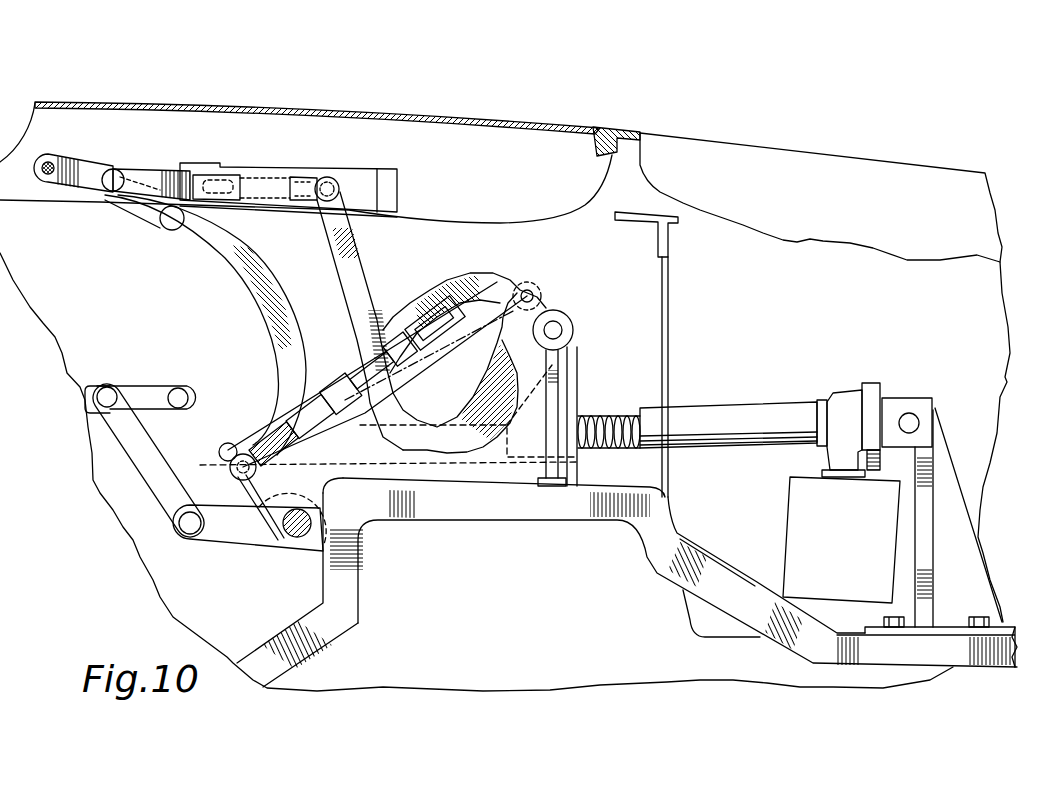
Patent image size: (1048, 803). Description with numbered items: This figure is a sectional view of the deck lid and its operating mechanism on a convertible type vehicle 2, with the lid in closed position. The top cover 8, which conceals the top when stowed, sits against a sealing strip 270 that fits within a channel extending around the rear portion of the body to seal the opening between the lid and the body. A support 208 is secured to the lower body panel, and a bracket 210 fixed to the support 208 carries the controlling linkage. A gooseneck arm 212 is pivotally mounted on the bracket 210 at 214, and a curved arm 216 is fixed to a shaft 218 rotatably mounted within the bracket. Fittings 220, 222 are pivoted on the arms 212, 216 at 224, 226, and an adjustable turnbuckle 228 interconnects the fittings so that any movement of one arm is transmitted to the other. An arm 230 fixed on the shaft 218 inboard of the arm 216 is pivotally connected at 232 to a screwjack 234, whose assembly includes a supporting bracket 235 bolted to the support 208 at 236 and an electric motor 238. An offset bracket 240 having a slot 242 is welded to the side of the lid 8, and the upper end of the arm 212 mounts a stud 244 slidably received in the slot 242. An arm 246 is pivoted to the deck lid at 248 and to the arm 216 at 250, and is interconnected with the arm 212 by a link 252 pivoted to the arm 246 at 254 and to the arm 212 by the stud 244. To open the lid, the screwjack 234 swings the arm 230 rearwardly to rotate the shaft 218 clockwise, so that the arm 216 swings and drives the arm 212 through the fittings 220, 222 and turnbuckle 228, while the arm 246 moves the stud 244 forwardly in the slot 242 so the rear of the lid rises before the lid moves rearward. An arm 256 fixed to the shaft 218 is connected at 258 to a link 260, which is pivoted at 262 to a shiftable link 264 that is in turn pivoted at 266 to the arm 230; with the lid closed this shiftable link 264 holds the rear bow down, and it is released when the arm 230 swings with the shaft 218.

The convertible type vehicle 2 is at (795, 140).
The top cover 8 is at (308, 103).
The sealing strip 270 is at (614, 128).
The pivot 248 is at (50, 160).
The arm 246 is at (96, 168).
The pivot 254 is at (118, 172).
The link 252 is at (162, 175).
The slot 242 is at (265, 185).
The stud 244 is at (333, 178).
The offset bracket 240 is at (377, 178).
The pivot 250 is at (170, 232).
The gooseneck arm 212 is at (366, 292).
The fitting 220 is at (497, 272).
The pivot 224 is at (533, 295).
The pivot 214 is at (562, 330).
The curved arm 216 is at (272, 328).
The adjustable turnbuckle 228 is at (338, 378).
The fitting 222 is at (276, 425).
The pivot connection 232 is at (230, 443).
The arm 230 is at (230, 465).
The pivot 226 is at (243, 479).
The pivot 262 is at (108, 388).
The pivot 266 is at (178, 390).
The shiftable link 264 is at (87, 400).
The link 260 is at (110, 418).
The connection 258 is at (192, 536).
The arm 256 is at (216, 542).
The shaft 218 is at (288, 537).
The support 208 is at (502, 510).
The screwjack 234 is at (613, 416).
The bracket 210 is at (575, 462).
The supporting bracket 235 is at (945, 455).
The electric motor 238 is at (800, 528).
The bolts 236 is at (890, 615).